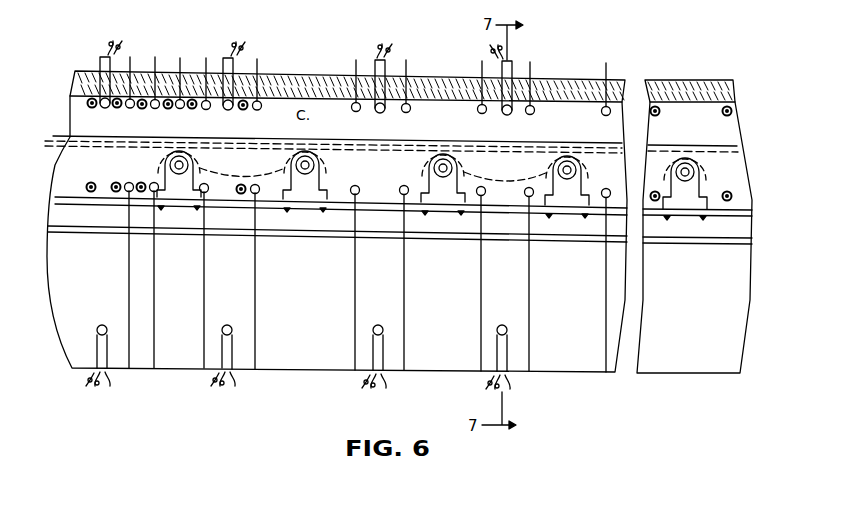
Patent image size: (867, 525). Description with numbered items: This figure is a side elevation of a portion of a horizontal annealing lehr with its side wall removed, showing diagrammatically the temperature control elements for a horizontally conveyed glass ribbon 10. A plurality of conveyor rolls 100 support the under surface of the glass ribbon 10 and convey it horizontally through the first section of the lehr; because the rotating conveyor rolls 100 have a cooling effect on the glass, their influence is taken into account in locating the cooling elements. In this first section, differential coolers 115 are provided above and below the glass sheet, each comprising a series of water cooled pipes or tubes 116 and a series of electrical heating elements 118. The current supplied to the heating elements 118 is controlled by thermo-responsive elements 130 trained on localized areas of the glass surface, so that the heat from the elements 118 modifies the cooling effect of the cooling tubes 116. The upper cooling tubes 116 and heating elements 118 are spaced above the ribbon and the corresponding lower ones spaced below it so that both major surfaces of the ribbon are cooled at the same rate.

The glass ribbon 10 is at (72, 136).
The conveyor rolls 100 is at (266, 173).
The differential coolers 115 is at (146, 62).
The water cooled pipes or tubes 116 is at (167, 99).
The electrical heating elements 118 is at (205, 109).
The thermo-responsive elements 130 is at (110, 57).